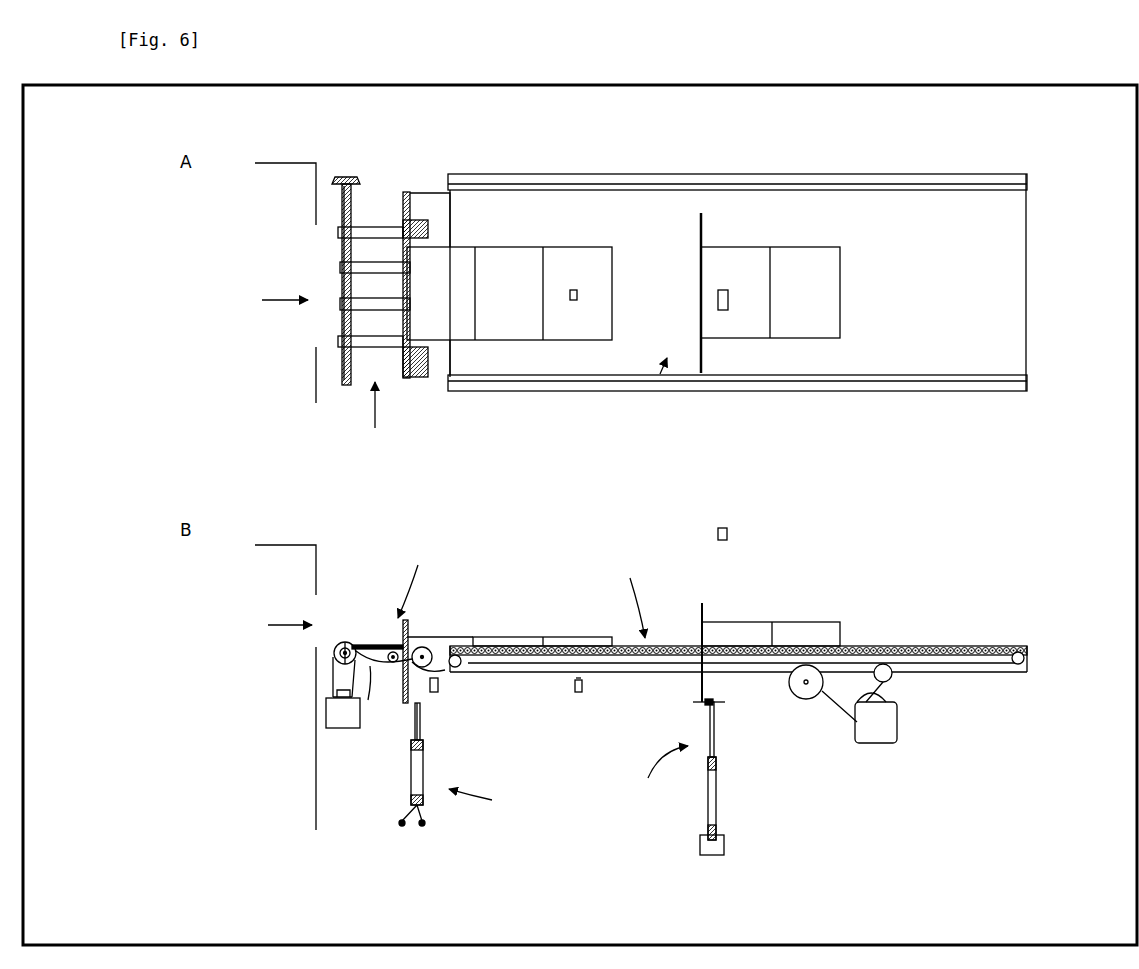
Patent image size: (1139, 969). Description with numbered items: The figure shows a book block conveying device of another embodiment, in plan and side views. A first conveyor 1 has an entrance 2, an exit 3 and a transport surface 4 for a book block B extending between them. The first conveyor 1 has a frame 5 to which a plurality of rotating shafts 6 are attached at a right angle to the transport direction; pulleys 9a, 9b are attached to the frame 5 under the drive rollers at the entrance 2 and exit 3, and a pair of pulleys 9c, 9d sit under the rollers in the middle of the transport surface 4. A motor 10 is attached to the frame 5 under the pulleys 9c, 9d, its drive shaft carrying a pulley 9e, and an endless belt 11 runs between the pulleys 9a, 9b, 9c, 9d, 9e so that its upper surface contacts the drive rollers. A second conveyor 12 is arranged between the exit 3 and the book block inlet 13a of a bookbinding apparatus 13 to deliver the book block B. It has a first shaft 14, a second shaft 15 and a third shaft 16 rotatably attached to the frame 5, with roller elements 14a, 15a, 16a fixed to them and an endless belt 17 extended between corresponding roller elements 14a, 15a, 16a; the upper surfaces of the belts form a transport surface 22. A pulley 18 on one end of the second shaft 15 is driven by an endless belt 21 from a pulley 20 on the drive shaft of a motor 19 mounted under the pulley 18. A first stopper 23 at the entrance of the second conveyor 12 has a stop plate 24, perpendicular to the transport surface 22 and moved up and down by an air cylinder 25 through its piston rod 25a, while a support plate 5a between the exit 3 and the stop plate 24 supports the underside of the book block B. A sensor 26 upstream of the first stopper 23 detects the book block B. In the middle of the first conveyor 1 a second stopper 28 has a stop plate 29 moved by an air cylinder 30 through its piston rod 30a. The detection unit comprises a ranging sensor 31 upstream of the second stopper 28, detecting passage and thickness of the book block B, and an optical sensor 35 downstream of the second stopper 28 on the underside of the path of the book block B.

The first conveyor 1 is at (663, 378).
The entrance 2 is at (1022, 268).
The exit 3 is at (445, 355).
The transport surface 4 is at (893, 372).
The frame 5 is at (1030, 178).
The support plate 5a is at (422, 360).
The rotating shafts 6 is at (632, 646).
The pulley 9a is at (1018, 665).
The pulley 9b is at (461, 666).
The pulley 9c is at (800, 700).
The pulley 9d is at (891, 681).
The pulley 9e is at (852, 720).
The motor 10 is at (875, 744).
The endless belt 11 is at (680, 662).
The second conveyor 12 is at (397, 500).
The bookbinding apparatus 13 is at (292, 203).
The book block inlet 13a is at (266, 462).
The first shaft 14 is at (428, 665).
The roller elements 14a is at (440, 675).
The second shaft 15 is at (352, 212).
The roller elements 15a is at (362, 648).
The third shaft 16 is at (393, 663).
The roller elements 16a is at (388, 670).
The endless belt 17 is at (340, 232).
The pulley 18 is at (352, 182).
The motor 19 is at (343, 729).
The pulley 20 is at (330, 692).
The endless belt 21 is at (333, 672).
The transport surface 22 is at (355, 268).
The first stopper 23 is at (475, 804).
The stop plate 24 is at (405, 200).
The air cylinder 25 is at (406, 780).
The piston rod 25a is at (425, 742).
The sensor 26 is at (434, 693).
The second stopper 28 is at (659, 773).
The stop plate 29 is at (698, 262).
The air cylinder 30 is at (716, 800).
The piston rod 30a is at (710, 722).
The ranging sensor 31 is at (722, 290).
The optical sensor 35 is at (573, 305).
The book block B is at (463, 340).